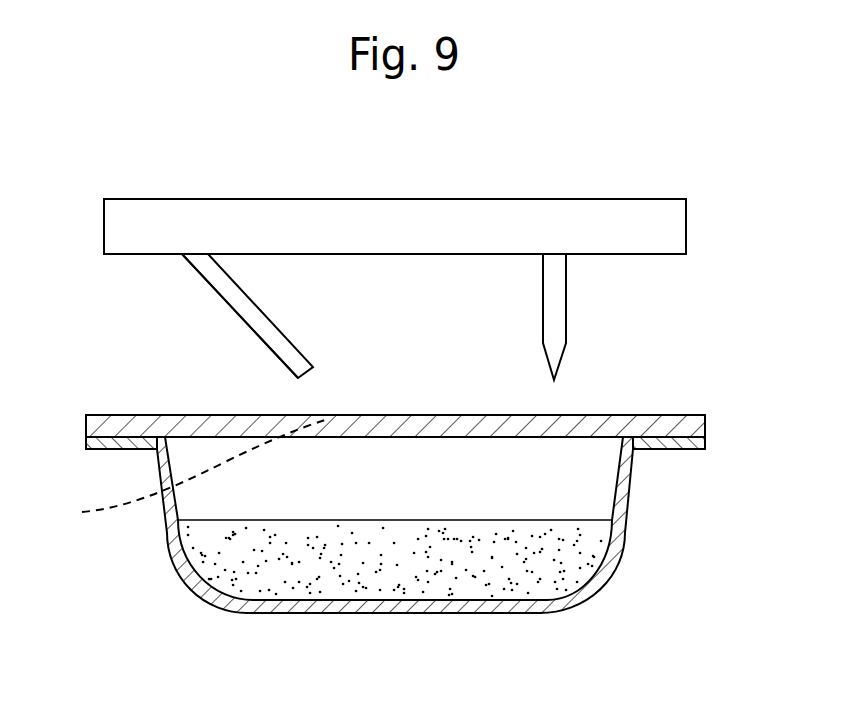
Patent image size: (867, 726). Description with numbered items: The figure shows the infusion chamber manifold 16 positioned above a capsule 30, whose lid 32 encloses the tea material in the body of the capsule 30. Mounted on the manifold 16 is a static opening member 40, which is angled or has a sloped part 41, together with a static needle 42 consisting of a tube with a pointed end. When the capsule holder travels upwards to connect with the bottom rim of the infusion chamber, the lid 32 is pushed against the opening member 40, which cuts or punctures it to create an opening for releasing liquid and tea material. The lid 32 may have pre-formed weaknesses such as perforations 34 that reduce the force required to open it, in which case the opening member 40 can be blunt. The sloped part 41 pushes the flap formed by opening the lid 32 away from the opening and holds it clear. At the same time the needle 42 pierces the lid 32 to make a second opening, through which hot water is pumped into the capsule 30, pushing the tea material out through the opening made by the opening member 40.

The infusion chamber manifold 16 is at (657, 225).
The capsule 30 is at (210, 661).
The lid 32 is at (677, 420).
The perforations 34 is at (185, 471).
The static opening member 40 is at (302, 361).
The sloped part 41 is at (206, 298).
The static needle 42 is at (554, 344).